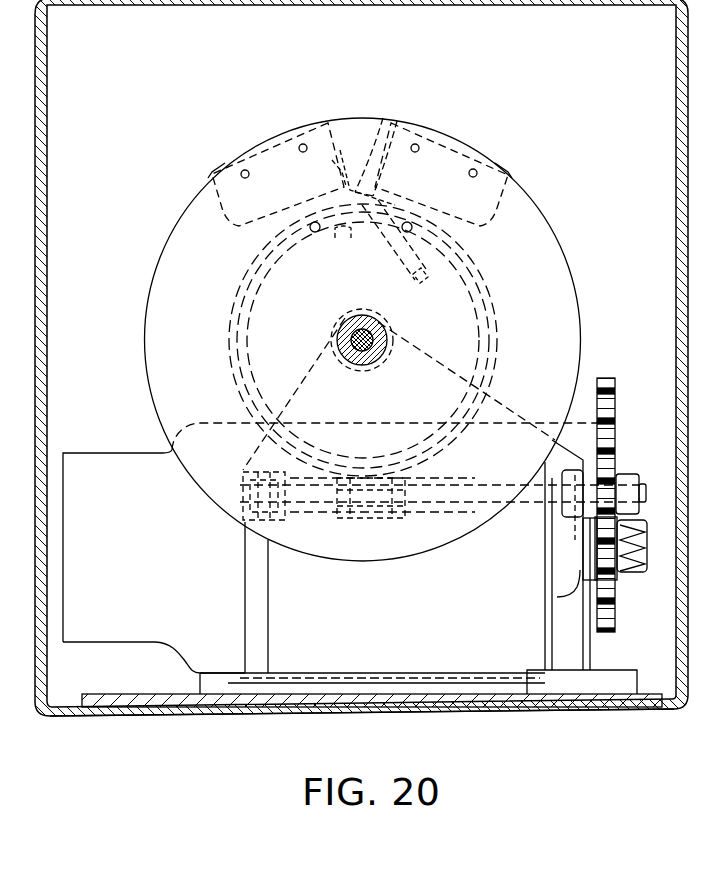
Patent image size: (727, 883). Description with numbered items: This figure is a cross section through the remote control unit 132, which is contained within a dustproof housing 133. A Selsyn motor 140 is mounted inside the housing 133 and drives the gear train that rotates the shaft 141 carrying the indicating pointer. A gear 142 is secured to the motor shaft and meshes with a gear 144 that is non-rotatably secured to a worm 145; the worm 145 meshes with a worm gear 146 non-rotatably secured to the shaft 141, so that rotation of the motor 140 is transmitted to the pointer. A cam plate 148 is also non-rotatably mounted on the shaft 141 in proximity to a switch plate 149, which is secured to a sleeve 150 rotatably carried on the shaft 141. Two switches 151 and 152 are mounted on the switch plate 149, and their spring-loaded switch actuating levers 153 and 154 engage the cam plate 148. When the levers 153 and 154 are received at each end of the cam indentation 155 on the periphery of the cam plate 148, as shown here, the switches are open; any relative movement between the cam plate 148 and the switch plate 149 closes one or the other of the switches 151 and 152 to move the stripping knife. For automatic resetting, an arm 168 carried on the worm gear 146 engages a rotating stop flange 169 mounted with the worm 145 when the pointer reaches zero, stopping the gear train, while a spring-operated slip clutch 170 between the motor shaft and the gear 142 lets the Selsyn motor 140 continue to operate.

The remote control unit 132 is at (180, 730).
The dustproof housing 133 is at (366, 4).
The Selsyn motor 140 is at (520, 632).
The shaft 141 is at (376, 349).
The gear 142 is at (616, 628).
The gear 144 is at (612, 404).
The worm 145 is at (375, 510).
The worm gear 146 is at (496, 374).
The cam plate 148 is at (246, 287).
The switch plate 149 is at (184, 228).
The sleeve 150 is at (364, 366).
The switch 151 is at (262, 150).
The switch 152 is at (457, 156).
The switch actuating lever 153 is at (314, 233).
The switch actuating lever 154 is at (426, 278).
The cam indentation 155 is at (342, 240).
The arm 168 is at (385, 118).
The rotating stop flange 169 is at (278, 520).
The spring-operated slip clutch 170 is at (622, 567).